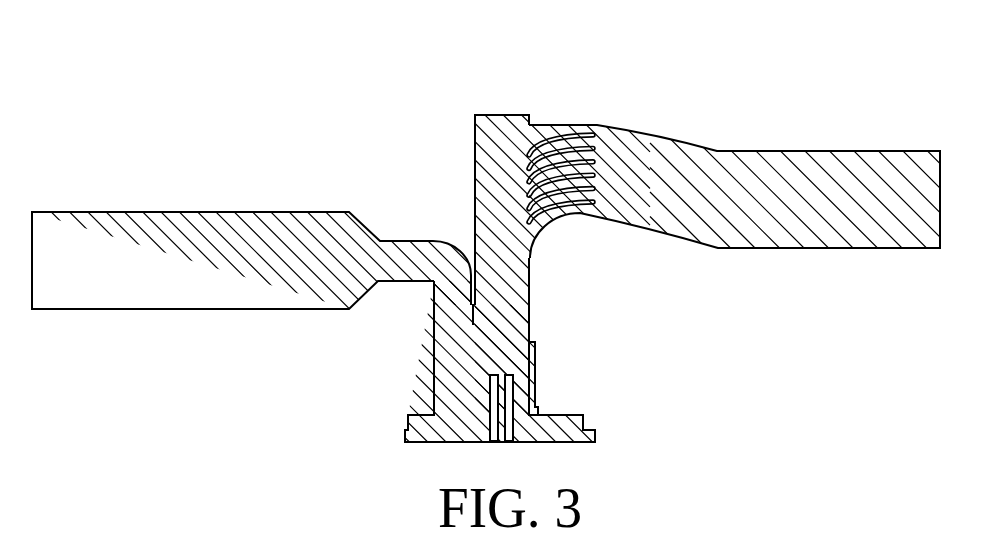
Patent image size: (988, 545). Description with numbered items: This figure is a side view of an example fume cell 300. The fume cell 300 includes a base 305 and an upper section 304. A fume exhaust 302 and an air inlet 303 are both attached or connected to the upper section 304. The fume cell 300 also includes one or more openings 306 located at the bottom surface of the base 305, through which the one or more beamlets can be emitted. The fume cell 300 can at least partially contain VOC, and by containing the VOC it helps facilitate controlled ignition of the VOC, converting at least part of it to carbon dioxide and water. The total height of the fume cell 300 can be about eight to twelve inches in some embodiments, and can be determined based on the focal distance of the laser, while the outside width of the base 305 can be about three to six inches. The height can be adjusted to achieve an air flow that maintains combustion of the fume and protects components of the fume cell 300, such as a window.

The fume cell 300 is at (121, 56).
The fume exhaust 302 is at (233, 213).
The air inlet 303 is at (837, 151).
The upper section 304 is at (475, 185).
The base 305 is at (434, 373).
The openings 306 is at (530, 390).